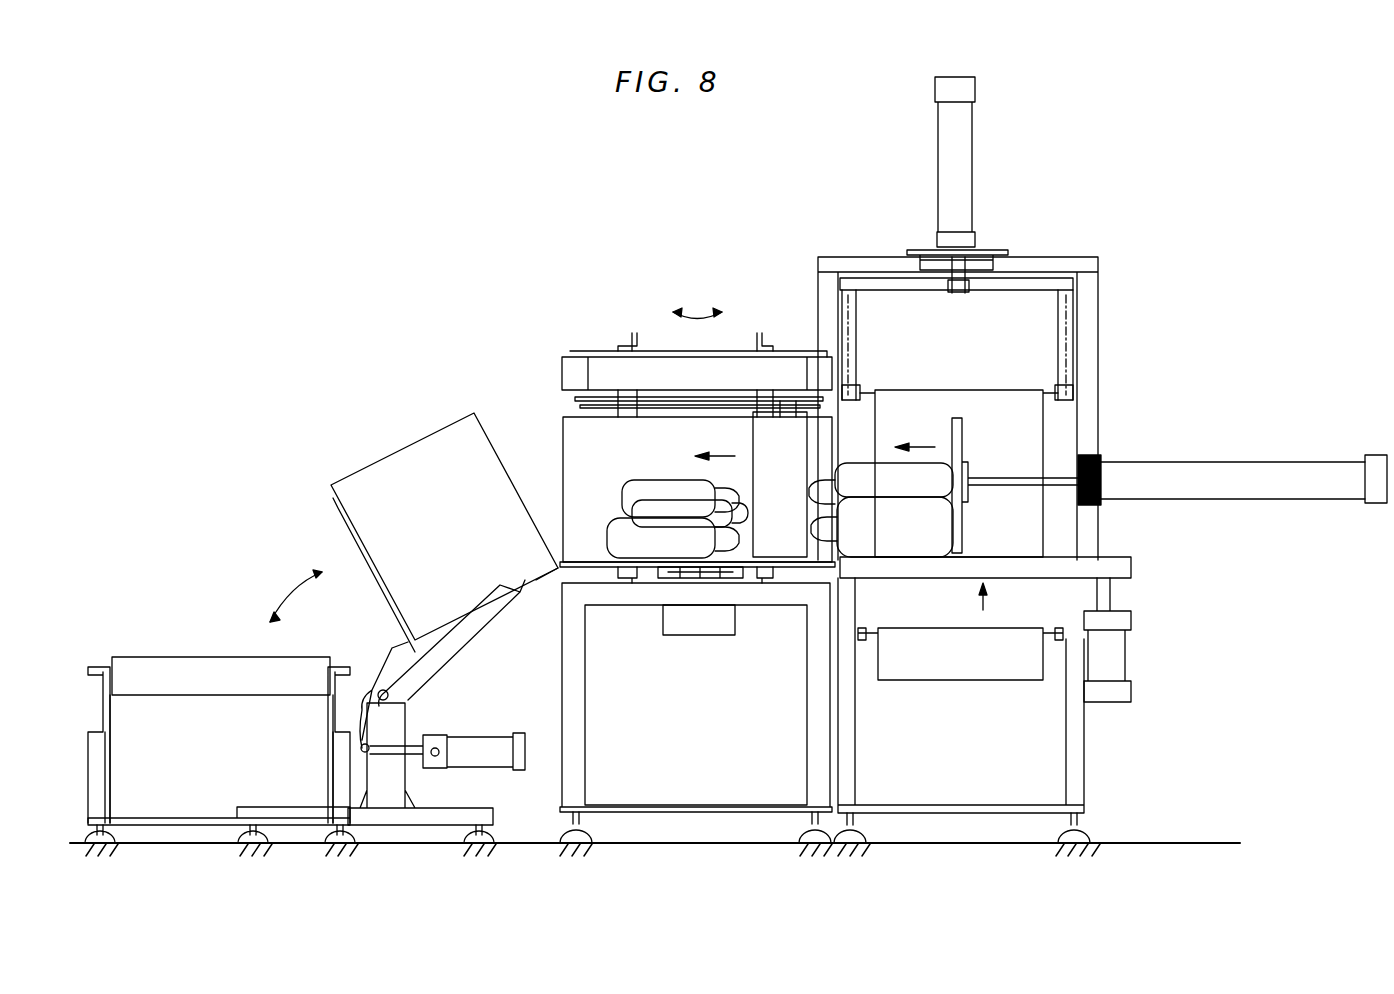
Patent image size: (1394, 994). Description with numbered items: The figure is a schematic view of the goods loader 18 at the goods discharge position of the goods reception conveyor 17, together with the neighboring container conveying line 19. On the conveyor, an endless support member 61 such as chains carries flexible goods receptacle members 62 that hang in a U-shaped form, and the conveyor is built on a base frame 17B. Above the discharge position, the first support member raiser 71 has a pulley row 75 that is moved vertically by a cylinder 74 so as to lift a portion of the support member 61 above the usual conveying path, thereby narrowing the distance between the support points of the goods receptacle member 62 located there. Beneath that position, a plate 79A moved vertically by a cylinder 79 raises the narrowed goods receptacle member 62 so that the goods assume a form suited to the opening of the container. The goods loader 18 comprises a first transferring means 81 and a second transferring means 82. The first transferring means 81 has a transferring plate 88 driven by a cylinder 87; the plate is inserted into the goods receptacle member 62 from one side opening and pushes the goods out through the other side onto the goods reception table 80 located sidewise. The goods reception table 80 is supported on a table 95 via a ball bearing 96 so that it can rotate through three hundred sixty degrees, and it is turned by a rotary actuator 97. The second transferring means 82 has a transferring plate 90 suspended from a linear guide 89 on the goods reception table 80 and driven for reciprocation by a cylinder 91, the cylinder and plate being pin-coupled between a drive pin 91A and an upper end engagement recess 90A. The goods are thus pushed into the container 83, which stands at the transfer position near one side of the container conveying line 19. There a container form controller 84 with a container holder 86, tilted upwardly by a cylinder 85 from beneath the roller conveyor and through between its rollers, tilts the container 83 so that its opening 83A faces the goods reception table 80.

The goods reception conveyor 17 is at (1082, 430).
The base frame 17B is at (1085, 752).
The goods loader 18 is at (590, 345).
The container conveying line 19 is at (187, 656).
The support member 61 is at (1082, 340).
The goods receptacle member 62 is at (985, 390).
The first support member raiser 71 is at (935, 145).
The cylinder 74 is at (945, 187).
The pulley row 75 is at (938, 290).
The cylinder 79 is at (1135, 668).
The plate 79A is at (895, 574).
The goods reception table 80 is at (590, 545).
The first transferring means 81 is at (1210, 465).
The second transferring means 82 is at (665, 345).
The container 83 is at (390, 457).
The opening 83A is at (505, 464).
The container form controller 84 is at (385, 644).
The cylinder 85 is at (470, 740).
The container holder 86 is at (484, 610).
The cylinder 87 is at (1240, 500).
The transferring plate 88 is at (965, 445).
The linear guide 89 is at (598, 400).
The transferring plate 90 is at (770, 440).
The upper end engagement recess 90A is at (840, 428).
The cylinder 91 is at (600, 367).
The drive pin 91A is at (780, 393).
The table 95 is at (585, 745).
The ball bearing 96 is at (650, 575).
The rotary actuator 97 is at (704, 635).